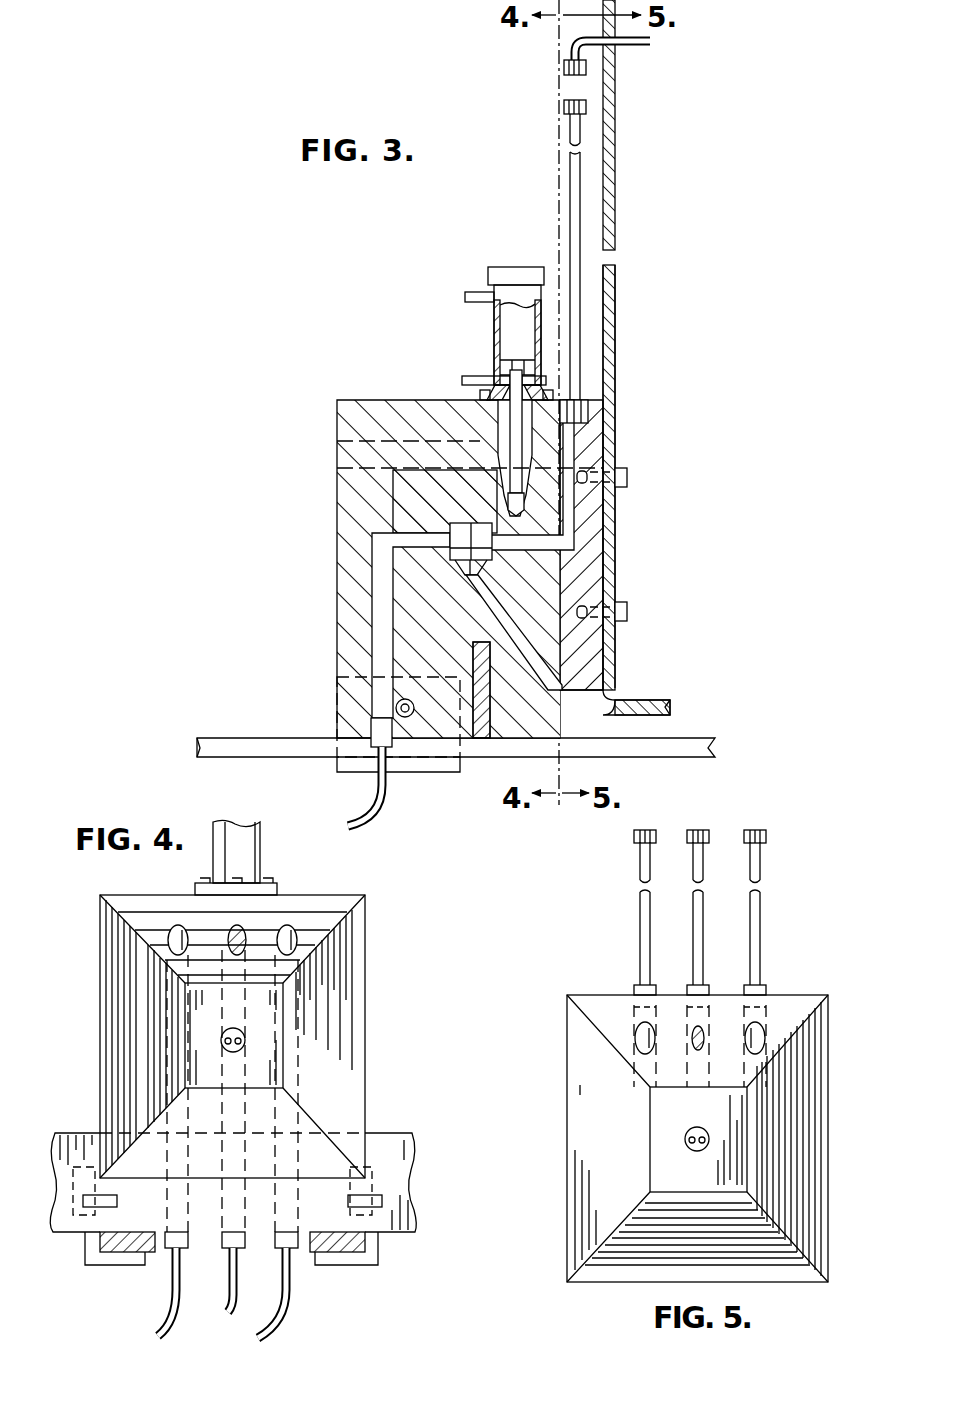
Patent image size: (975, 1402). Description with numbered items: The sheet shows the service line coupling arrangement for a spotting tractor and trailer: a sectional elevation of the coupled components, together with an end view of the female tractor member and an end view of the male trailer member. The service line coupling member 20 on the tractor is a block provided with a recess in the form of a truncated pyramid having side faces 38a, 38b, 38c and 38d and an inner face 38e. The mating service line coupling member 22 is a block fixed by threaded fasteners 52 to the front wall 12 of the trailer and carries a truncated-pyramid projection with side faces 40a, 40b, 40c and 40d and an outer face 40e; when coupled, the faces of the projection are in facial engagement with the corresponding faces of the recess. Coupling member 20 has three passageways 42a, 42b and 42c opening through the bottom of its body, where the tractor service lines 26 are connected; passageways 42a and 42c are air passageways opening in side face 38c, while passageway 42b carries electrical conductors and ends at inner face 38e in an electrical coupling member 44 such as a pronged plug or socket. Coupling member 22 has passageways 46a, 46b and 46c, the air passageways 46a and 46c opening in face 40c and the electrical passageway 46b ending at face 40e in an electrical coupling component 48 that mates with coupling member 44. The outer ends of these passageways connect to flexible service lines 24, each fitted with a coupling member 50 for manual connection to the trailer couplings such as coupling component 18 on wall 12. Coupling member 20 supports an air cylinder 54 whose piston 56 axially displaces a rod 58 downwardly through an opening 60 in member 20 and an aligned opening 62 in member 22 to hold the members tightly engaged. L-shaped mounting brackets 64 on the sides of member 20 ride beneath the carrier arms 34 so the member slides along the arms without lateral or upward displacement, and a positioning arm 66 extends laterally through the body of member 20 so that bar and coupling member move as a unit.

In FIG. 3, the front wall 12 is at (610, 90).
In FIG. 3, the coupling component 18 is at (572, 55).
In FIG. 3, the service line coupling member 20 is at (358, 400).
In FIG. 4, the service line coupling member 20 is at (158, 895).
In FIG. 3, the mating service line coupling member 22 is at (590, 581).
In FIG. 5, the mating service line coupling member 22 is at (612, 995).
In FIG. 3, the service lines 24 is at (550, 207).
In FIG. 5, the service lines 24 is at (773, 880).
In FIG. 3, the service lines 26 is at (352, 797).
In FIG. 4, the service lines 26 is at (150, 1334).
In FIG. 3, the arms 34 is at (308, 738).
In FIG. 4, the arms 34 is at (112, 1235).
In FIG. 3, the side face 38a is at (540, 660).
In FIG. 4, the side face 38a is at (315, 1170).
In FIG. 4, the side face 38b is at (130, 1030).
In FIG. 3, the side face 38c is at (590, 413).
In FIG. 4, the side face 38c is at (315, 905).
In FIG. 4, the side face 38d is at (340, 980).
In FIG. 4, the inner face 38e is at (262, 1058).
In FIG. 3, the side face 40a is at (545, 670).
In FIG. 5, the side face 40a is at (637, 1262).
In FIG. 5, the side face 40b is at (582, 1092).
In FIG. 3, the side face 40c is at (495, 452).
In FIG. 5, the side face 40c is at (775, 1010).
In FIG. 5, the side face 40d is at (805, 1077).
In FIG. 5, the outer face 40e is at (658, 1175).
In FIG. 4, the passageway 42a is at (178, 925).
In FIG. 3, the passageway 42b is at (372, 617).
In FIG. 4, the passageway 42b is at (215, 1195).
In FIG. 3, the passageway 42c is at (372, 467).
In FIG. 4, the passageway 42c is at (297, 936).
In FIG. 3, the electrical coupling member 44 is at (460, 560).
In FIG. 4, the electrical coupling member 44 is at (245, 1040).
In FIG. 5, the passageway 46a is at (762, 1040).
In FIG. 3, the passageway 46b is at (580, 518).
In FIG. 3, the passageway 46c is at (600, 443).
In FIG. 5, the passageway 46c is at (635, 1035).
In FIG. 3, the electrical coupling component 48 is at (500, 570).
In FIG. 5, the electrical coupling component 48 is at (686, 1136).
In FIG. 3, the coupling member 50 is at (566, 107).
In FIG. 5, the coupling member 50 is at (757, 832).
In FIG. 3, the threaded fasteners 52 is at (625, 613).
In FIG. 3, the air cylinder 54 is at (518, 268).
In FIG. 4, the air cylinder 54 is at (243, 830).
In FIG. 3, the piston 56 is at (525, 362).
In FIG. 3, the rod 58 is at (537, 392).
In FIG. 4, the rod 58 is at (234, 1024).
In FIG. 5, the rod 58 is at (702, 1030).
In FIG. 3, the opening 60 is at (503, 452).
In FIG. 4, the opening 60 is at (240, 930).
In FIG. 3, the opening 62 is at (470, 513).
In FIG. 3, the L-shaped mounting brackets 64 is at (401, 778).
In FIG. 4, the L-shaped mounting brackets 64 is at (78, 1243).
In FIG. 3, the positioning arm 66 is at (476, 742).